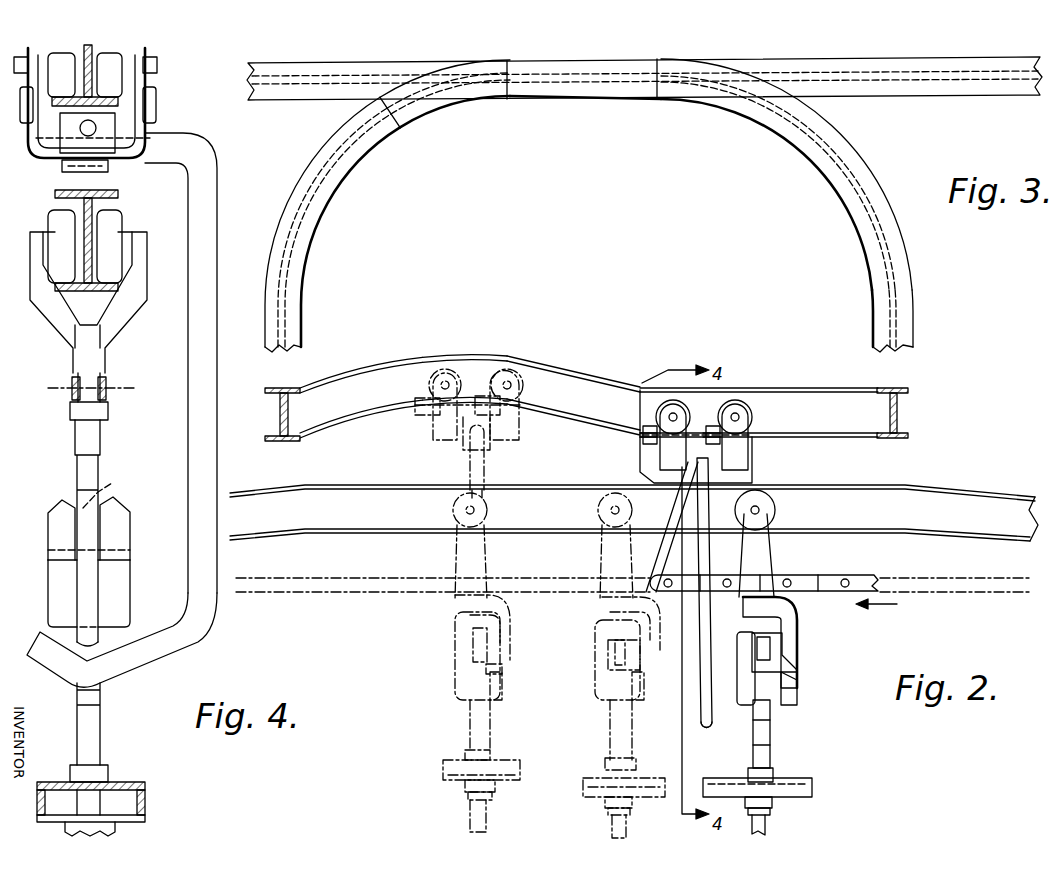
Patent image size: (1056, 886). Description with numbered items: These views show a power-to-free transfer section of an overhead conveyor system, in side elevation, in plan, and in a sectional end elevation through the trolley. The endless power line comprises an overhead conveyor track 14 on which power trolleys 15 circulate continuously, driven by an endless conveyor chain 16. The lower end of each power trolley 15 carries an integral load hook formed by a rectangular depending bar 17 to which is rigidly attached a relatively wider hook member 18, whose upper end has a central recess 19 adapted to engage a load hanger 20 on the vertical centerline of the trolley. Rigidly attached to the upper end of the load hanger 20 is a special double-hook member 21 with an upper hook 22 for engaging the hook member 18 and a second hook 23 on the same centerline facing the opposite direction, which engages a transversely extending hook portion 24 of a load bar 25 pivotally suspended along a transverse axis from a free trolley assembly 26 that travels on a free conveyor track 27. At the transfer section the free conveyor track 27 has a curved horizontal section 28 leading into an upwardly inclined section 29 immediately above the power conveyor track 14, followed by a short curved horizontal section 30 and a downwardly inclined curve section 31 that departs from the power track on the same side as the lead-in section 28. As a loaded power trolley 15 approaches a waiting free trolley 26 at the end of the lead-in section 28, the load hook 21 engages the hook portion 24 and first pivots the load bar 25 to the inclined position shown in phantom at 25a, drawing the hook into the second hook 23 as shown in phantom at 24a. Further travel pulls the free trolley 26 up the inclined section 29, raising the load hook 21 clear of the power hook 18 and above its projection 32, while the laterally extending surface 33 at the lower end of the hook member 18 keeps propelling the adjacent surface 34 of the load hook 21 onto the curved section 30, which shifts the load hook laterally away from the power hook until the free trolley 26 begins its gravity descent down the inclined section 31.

In FIG. 3, the overhead conveyor track 14 is at (320, 94).
In FIG. 2, the overhead conveyor track 14 is at (943, 496).
In FIG. 4, the overhead conveyor track 14 is at (62, 195).
In FIG. 2, the power trolley 15 is at (460, 548).
In FIG. 4, the power trolley 15 is at (48, 314).
In FIG. 2, the endless conveyor chain 16 is at (818, 580).
In FIG. 4, the endless conveyor chain 16 is at (72, 383).
In FIG. 2, the rectangular depending bar 17 is at (787, 615).
In FIG. 4, the rectangular depending bar 17 is at (80, 437).
In FIG. 2, the hook member 18 is at (758, 653).
In FIG. 4, the hook member 18 is at (115, 538).
In FIG. 4, the central recess 19 is at (115, 487).
In FIG. 2, the load hanger 20 is at (767, 825).
In FIG. 4, the load hanger 20 is at (110, 830).
In FIG. 2, the double-hook member 21 is at (745, 673).
In FIG. 4, the double-hook member 21 is at (83, 537).
In FIG. 2, the upper hook 22 is at (767, 643).
In FIG. 2, the second hook 23 is at (745, 707).
In FIG. 2, the hook portion 24 is at (707, 728).
In FIG. 4, the hook portion 24 is at (90, 667).
In FIG. 2, the hook portion in phantom position 24a is at (613, 712).
In FIG. 2, the load bar 25 is at (708, 615).
In FIG. 4, the load bar 25 is at (198, 420).
In FIG. 2, the load bar in inclined phantom position 25a is at (672, 548).
In FIG. 2, the free trolley assembly 26 is at (747, 455).
In FIG. 4, the free trolley assembly 26 is at (105, 130).
In FIG. 3, the free conveyor track 27 is at (893, 333).
In FIG. 2, the free conveyor track 27 is at (900, 412).
In FIG. 3, the curved horizontal section 28 is at (850, 195).
In FIG. 2, the curved horizontal section 28 is at (810, 400).
In FIG. 3, the upwardly inclined section 29 is at (587, 100).
In FIG. 2, the upwardly inclined section 29 is at (580, 368).
In FIG. 3, the short curved horizontal section 30 is at (433, 104).
In FIG. 2, the short curved horizontal section 30 is at (473, 362).
In FIG. 3, the downwardly inclined curve section 31 is at (317, 202).
In FIG. 2, the downwardly inclined curve section 31 is at (332, 427).
In FIG. 4, the projection 32 is at (113, 488).
In FIG. 2, the laterally extending surface 33 is at (783, 682).
In FIG. 4, the laterally extending surface 33 is at (115, 590).
In FIG. 2, the adjacent surface 34 is at (510, 683).